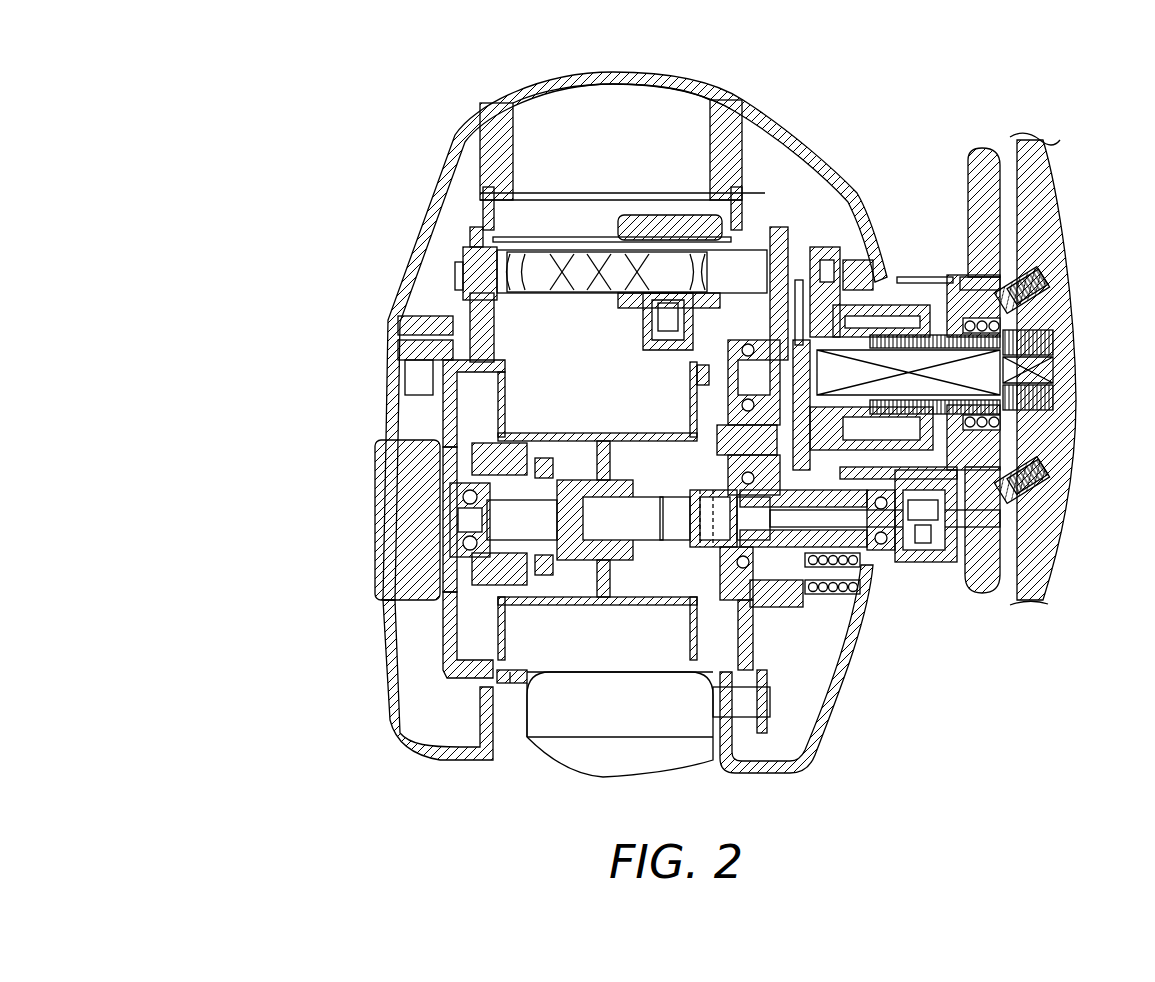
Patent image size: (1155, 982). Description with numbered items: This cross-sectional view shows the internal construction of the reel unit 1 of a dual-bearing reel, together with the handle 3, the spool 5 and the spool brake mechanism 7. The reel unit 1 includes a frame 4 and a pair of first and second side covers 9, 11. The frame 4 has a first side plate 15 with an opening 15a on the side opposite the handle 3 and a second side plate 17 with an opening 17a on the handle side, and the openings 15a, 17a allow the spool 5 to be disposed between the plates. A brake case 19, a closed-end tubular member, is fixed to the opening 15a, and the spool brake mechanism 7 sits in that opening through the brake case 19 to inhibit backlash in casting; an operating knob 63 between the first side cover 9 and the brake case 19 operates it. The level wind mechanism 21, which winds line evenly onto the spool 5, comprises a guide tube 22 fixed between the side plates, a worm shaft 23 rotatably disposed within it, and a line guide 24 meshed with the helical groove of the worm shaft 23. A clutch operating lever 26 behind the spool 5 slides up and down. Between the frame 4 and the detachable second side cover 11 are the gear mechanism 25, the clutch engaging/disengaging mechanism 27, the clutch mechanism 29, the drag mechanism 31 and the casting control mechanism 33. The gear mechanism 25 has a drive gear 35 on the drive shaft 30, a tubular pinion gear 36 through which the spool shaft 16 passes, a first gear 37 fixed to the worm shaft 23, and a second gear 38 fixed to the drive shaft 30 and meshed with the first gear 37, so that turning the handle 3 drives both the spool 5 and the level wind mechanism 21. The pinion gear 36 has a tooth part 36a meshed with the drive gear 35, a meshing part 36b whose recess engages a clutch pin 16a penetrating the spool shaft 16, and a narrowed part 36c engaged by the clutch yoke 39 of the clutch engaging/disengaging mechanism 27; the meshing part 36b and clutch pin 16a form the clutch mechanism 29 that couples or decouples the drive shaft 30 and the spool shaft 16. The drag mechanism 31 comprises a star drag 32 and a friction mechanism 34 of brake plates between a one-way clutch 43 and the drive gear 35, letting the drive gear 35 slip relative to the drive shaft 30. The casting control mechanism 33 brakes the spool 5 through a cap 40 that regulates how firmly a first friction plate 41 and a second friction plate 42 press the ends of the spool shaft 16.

The reel unit 1 is at (277, 120).
The handle 3 is at (1073, 369).
The frame 4 is at (621, 66).
The spool 5 is at (605, 731).
The spool brake mechanism 7 is at (453, 677).
The first side cover 9 is at (585, 380).
The second side cover 11 is at (840, 147).
The first side plate 15 is at (468, 204).
The opening 15a is at (477, 380).
The spool shaft 16 is at (640, 558).
The clutch pin 16a is at (703, 484).
The second side plate 17 is at (703, 358).
The opening 17a is at (707, 384).
The brake case 19 is at (440, 417).
The level wind mechanism 21 is at (547, 253).
The guide tube 22 is at (567, 223).
The worm shaft 23 is at (513, 193).
The line guide 24 is at (663, 217).
The gear mechanism 25 is at (782, 227).
The clutch operating lever 26 is at (593, 767).
The clutch engaging/disengaging mechanism 27 is at (840, 600).
The clutch mechanism 29 is at (710, 484).
The drive shaft 30 is at (904, 343).
The drag mechanism 31 is at (903, 340).
The star drag 32 is at (980, 137).
The casting control mechanism 33 is at (844, 669).
The friction mechanism 34 is at (867, 267).
The drive gear 35 is at (820, 250).
The pinion gear 36 is at (715, 558).
The tooth part 36a is at (822, 580).
The meshing part 36b is at (673, 553).
The narrowed part 36c is at (803, 618).
The first gear 37 is at (782, 170).
The second gear 38 is at (797, 267).
The clutch yoke 39 is at (777, 590).
The cap 40 is at (913, 567).
The first friction plate 41 is at (950, 567).
The second friction plate 42 is at (440, 520).
The one-way clutch 43 is at (1030, 530).
The operating knob 63 is at (390, 503).